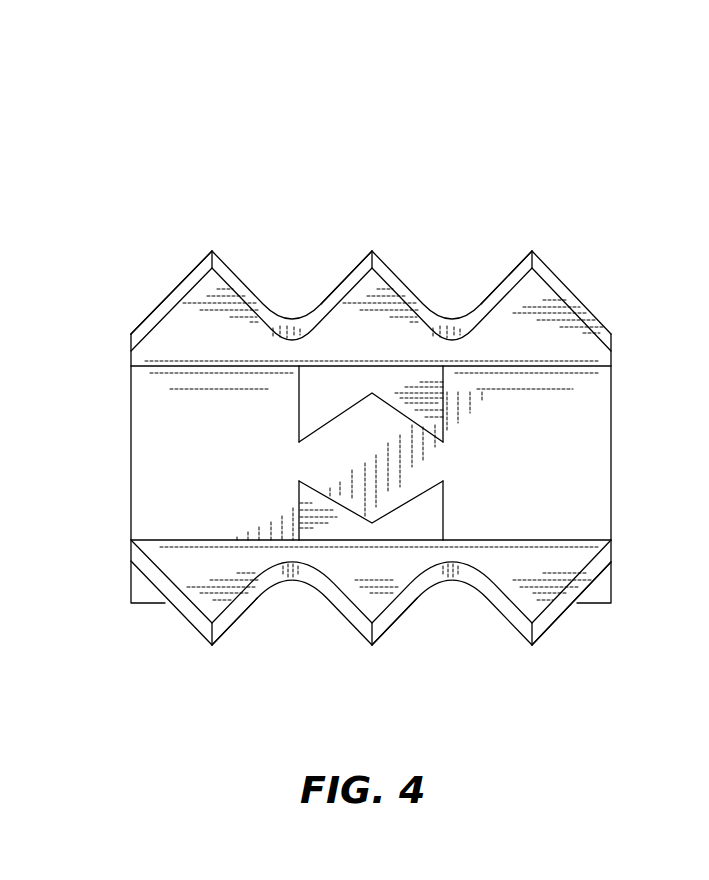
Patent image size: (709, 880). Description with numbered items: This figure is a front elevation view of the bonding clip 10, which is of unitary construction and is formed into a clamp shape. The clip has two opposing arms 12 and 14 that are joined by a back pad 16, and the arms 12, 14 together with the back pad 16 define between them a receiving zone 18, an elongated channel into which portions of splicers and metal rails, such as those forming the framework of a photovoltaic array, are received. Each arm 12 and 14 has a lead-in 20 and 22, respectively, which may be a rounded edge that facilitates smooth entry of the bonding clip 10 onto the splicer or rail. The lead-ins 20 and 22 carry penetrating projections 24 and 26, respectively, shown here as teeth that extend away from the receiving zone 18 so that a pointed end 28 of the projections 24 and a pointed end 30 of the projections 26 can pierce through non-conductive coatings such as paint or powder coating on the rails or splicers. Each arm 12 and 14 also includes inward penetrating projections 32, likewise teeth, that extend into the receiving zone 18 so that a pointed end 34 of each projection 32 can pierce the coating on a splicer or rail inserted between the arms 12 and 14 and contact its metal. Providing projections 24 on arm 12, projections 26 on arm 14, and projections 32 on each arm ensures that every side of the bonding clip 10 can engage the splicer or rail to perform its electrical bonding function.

The bonding clip 10 is at (463, 165).
The arm 12 is at (131, 367).
The arm 14 is at (131, 543).
The back pad 16 is at (611, 460).
The receiving zone 18 is at (112, 462).
The lead-in 20 is at (605, 308).
The lead-in 22 is at (133, 612).
The penetrating projection 24 is at (160, 304).
The penetrating projection 26 is at (251, 606).
The pointed end 28 is at (212, 251).
The pointed end 30 is at (212, 647).
The inward penetrating projection 32 is at (340, 400).
The pointed end 34 is at (299, 442).